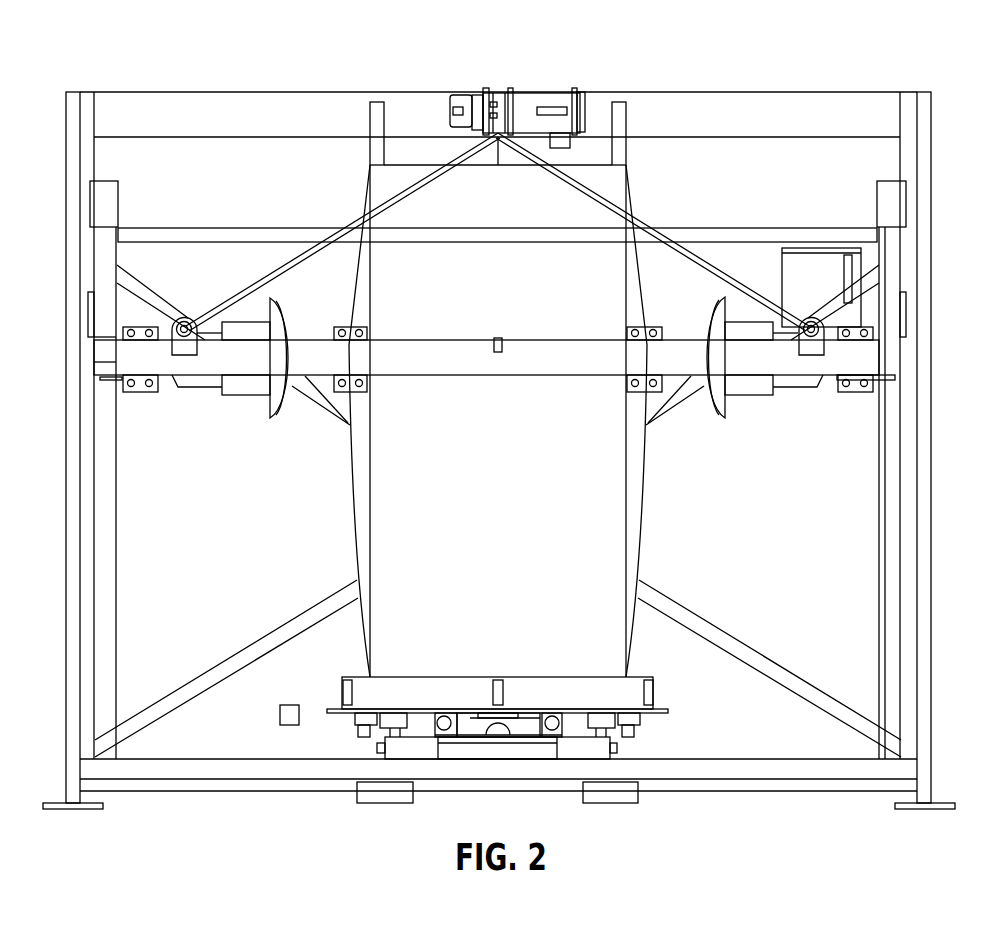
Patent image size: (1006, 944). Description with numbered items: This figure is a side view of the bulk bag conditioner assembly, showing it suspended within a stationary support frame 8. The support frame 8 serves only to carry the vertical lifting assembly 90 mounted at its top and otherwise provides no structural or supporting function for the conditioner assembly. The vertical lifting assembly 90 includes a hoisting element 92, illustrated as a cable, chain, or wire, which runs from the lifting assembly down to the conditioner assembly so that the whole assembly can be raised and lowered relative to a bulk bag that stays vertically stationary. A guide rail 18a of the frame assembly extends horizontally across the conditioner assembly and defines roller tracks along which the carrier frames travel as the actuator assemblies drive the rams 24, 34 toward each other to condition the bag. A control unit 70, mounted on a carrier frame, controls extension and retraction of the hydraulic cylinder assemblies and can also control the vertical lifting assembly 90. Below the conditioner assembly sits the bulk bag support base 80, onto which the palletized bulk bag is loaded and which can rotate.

The support frame 8 is at (103, 115).
The guide rail 18a is at (768, 357).
The ram 24 is at (722, 312).
The ram 34 is at (268, 315).
The control unit 70 is at (823, 283).
The bulk bag support base 80 is at (598, 748).
The vertical lifting assembly 90 is at (557, 108).
The hoisting element 92 is at (373, 207).